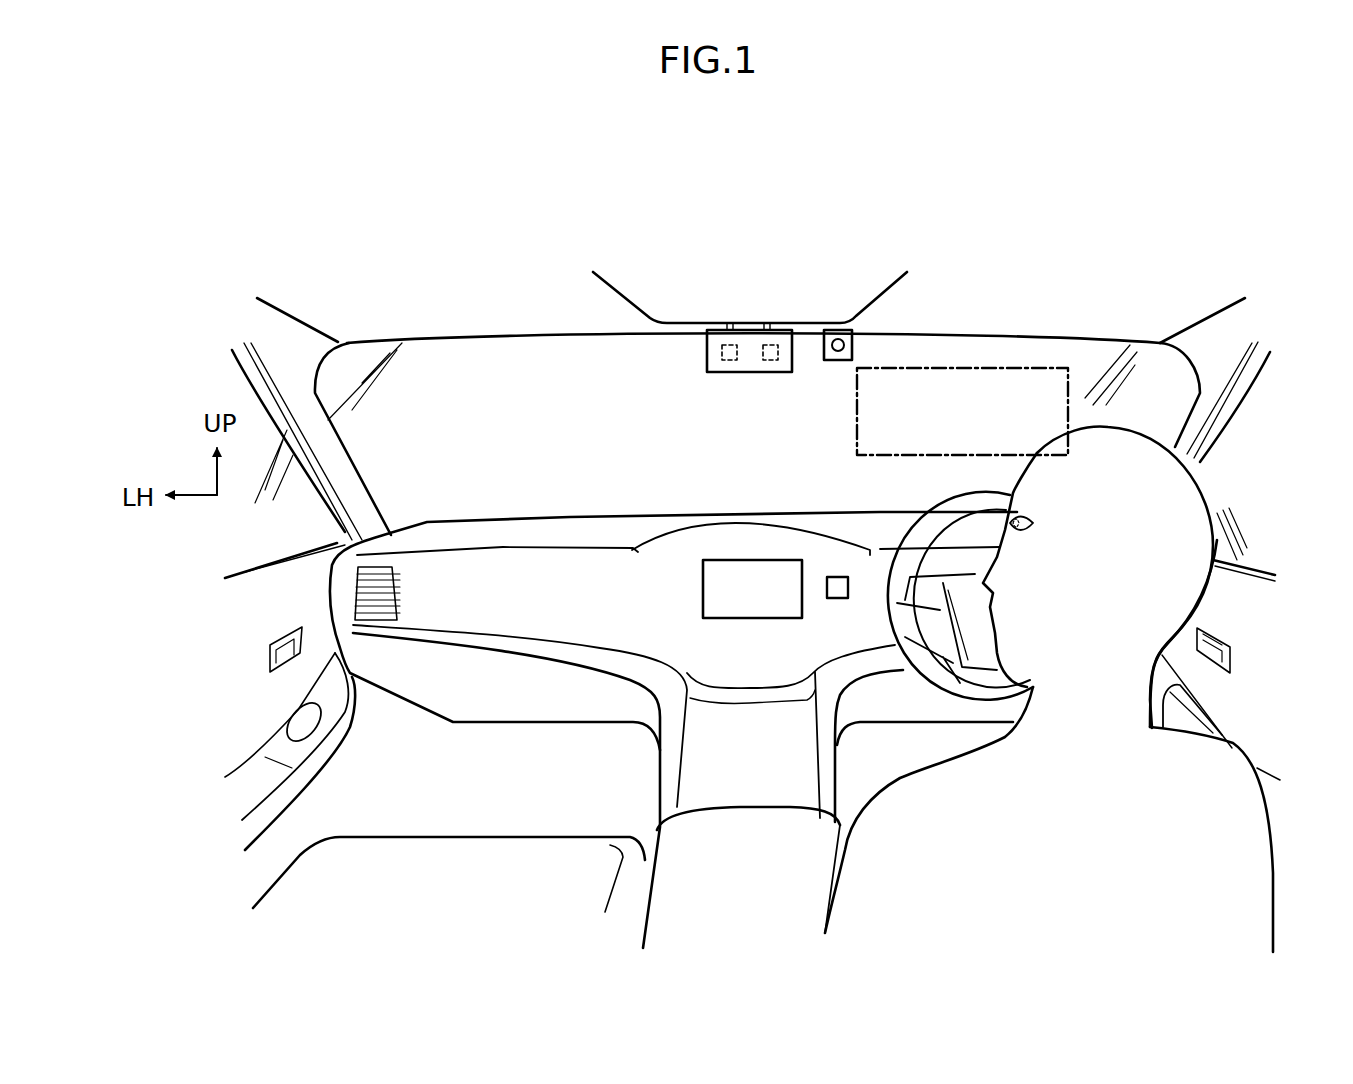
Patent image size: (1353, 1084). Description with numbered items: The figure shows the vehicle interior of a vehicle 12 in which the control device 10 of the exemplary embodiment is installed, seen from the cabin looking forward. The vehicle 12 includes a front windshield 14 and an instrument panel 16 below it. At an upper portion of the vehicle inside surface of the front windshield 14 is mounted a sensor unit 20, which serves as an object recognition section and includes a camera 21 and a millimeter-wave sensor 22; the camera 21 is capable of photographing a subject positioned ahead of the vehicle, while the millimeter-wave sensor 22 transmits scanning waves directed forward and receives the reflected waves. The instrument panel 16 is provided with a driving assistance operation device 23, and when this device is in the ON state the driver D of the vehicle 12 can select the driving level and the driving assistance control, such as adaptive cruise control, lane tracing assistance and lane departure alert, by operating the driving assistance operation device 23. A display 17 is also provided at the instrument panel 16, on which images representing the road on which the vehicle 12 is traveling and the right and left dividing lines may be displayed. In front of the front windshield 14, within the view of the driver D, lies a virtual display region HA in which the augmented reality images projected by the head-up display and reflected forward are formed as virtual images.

The control device 10 is at (756, 447).
The vehicle 12 is at (1010, 300).
The front windshield 14 is at (500, 347).
The instrument panel 16 is at (507, 553).
The display 17 is at (702, 588).
The sensor unit 20 is at (693, 380).
The camera 21 is at (727, 340).
The millimeter-wave sensor 22 is at (772, 340).
The driving assistance operation device 23 is at (838, 575).
The virtual display region HA is at (1063, 417).
The driver D is at (1208, 487).